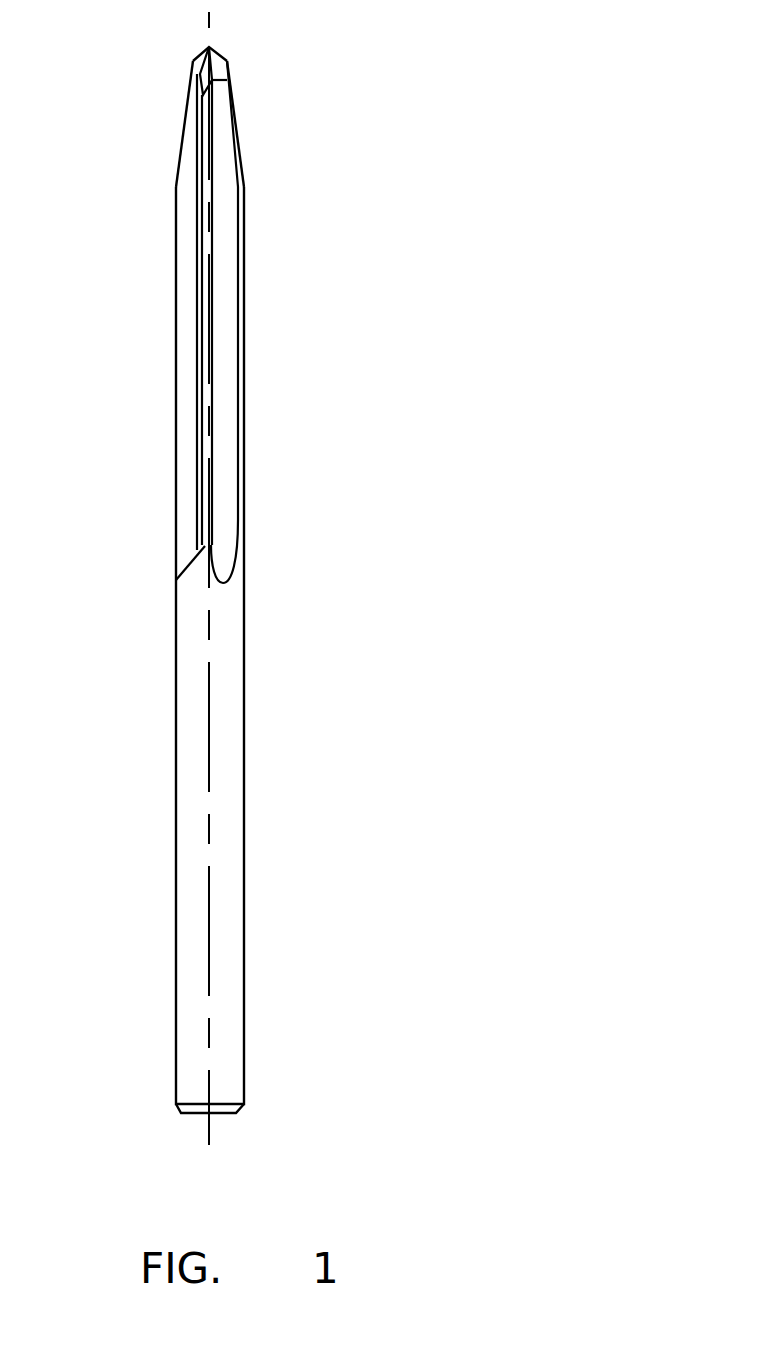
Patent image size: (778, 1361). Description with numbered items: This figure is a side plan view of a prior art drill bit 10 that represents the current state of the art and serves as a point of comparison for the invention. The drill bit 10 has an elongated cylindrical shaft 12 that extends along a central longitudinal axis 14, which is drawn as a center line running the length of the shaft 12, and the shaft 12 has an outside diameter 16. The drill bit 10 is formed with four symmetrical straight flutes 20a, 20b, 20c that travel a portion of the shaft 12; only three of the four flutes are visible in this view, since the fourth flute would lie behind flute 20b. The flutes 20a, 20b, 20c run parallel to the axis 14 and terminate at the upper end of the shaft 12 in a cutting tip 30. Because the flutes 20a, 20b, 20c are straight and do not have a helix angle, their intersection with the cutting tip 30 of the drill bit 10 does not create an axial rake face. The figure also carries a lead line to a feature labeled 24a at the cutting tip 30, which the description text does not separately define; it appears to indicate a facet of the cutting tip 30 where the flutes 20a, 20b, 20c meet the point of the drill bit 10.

The drill bit 10 is at (466, 217).
The elongated cylindrical shaft 12 is at (320, 464).
The central longitudinal axis 14 is at (210, 668).
The outside diameter 16 is at (275, 650).
The straight flute 20a is at (175, 400).
The straight flute 20b is at (208, 326).
The straight flute 20c is at (240, 415).
The tip cutting facet 24a is at (201, 83).
The cutting tip 30 is at (325, 108).